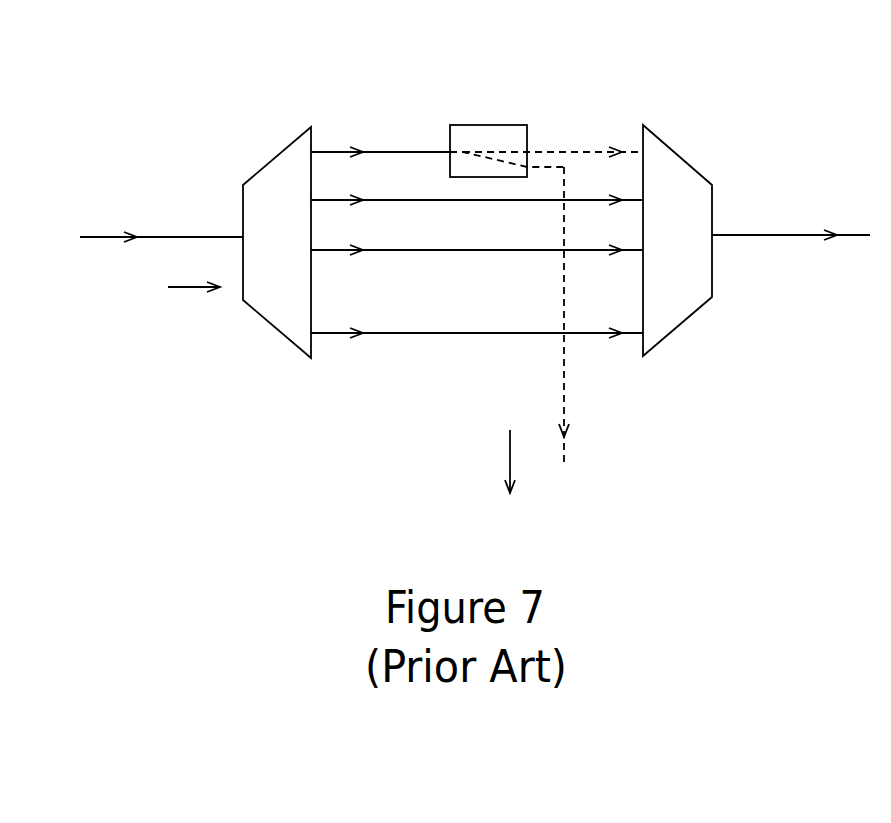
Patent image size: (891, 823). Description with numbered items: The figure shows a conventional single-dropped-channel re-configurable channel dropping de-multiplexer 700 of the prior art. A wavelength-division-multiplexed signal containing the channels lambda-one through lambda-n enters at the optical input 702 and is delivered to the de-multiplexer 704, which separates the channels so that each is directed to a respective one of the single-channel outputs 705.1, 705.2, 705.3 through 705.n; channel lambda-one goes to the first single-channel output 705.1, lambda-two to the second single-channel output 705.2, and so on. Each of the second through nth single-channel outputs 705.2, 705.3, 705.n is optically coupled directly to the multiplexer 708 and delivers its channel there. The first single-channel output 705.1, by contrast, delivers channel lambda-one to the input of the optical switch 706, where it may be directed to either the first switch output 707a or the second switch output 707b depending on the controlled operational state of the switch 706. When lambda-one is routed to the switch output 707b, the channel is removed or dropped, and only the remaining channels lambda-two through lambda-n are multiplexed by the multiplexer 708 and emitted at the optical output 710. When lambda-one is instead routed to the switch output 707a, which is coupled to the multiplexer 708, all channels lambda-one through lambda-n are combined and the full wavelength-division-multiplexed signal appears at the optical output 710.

The conventional single-dropped-channel re-configurable channel dropping de-multiple 700 is at (322, 52).
The optical input 702 is at (110, 237).
The de-multiplexer 704 is at (265, 165).
The first single-channel output 705.1 is at (335, 148).
The second single-channel output 705.2 is at (344, 187).
The third single-channel output 705.3 is at (345, 237).
The nth single-channel output 705.n is at (350, 320).
The optical switch 706 is at (508, 123).
The first switch output 707a is at (592, 150).
The second switch output 707b is at (567, 403).
The multiplexer 708 is at (665, 143).
The optical output 710 is at (802, 232).